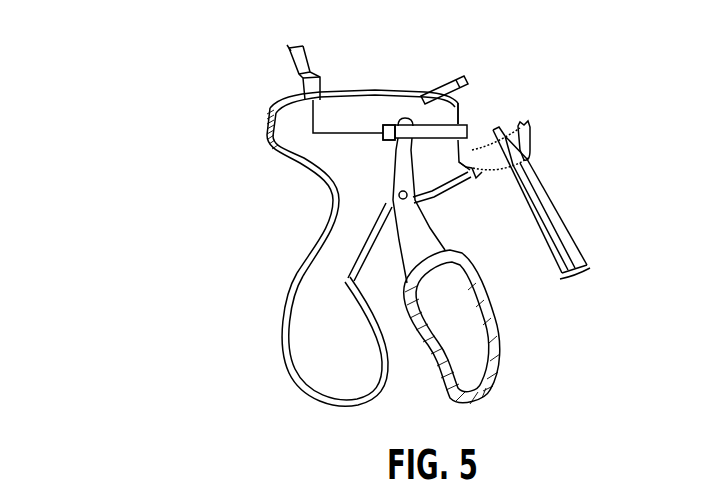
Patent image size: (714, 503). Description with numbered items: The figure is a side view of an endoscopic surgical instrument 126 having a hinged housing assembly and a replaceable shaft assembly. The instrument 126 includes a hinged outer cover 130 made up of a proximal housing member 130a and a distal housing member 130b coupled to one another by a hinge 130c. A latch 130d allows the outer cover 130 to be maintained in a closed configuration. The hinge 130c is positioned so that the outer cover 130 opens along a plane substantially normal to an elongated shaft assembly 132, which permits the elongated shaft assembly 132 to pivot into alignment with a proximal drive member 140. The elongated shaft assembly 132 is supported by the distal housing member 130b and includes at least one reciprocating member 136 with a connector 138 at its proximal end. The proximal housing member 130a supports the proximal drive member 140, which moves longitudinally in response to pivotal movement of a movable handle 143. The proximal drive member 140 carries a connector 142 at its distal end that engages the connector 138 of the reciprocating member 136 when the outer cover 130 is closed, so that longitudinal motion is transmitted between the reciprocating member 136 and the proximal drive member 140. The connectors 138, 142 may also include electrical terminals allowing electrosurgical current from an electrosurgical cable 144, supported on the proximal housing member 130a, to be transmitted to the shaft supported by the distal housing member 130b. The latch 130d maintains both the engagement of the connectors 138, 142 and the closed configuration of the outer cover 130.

The instrument 126 is at (160, 62).
The hinged outer cover 130 is at (281, 95).
The proximal housing member 130a is at (305, 285).
The distal housing member 130b is at (523, 143).
The hinge 130c is at (474, 172).
The latch 130d is at (445, 84).
The elongated shaft assembly 132 is at (562, 235).
The reciprocating member 136 is at (530, 190).
The connector 138 is at (496, 130).
The proximal drive member 140 is at (390, 127).
The connector 142 is at (463, 113).
The movable handle 143 is at (497, 336).
The electrosurgical cable 144 is at (303, 52).